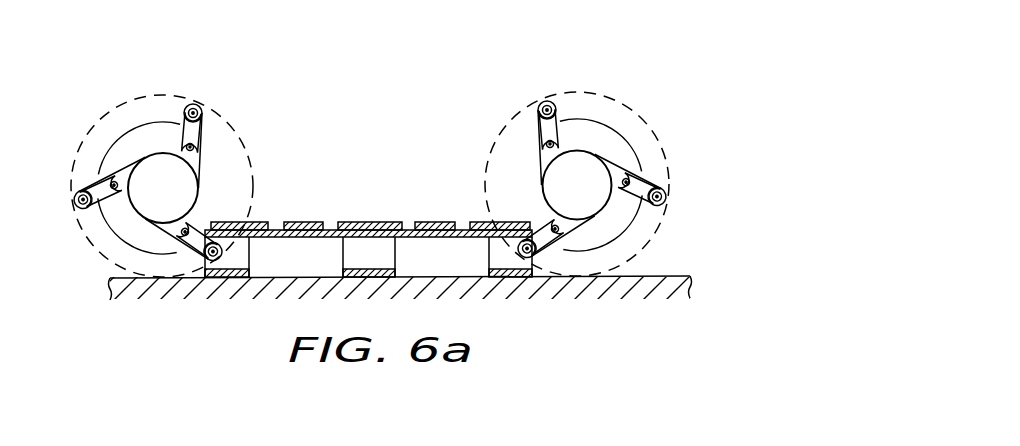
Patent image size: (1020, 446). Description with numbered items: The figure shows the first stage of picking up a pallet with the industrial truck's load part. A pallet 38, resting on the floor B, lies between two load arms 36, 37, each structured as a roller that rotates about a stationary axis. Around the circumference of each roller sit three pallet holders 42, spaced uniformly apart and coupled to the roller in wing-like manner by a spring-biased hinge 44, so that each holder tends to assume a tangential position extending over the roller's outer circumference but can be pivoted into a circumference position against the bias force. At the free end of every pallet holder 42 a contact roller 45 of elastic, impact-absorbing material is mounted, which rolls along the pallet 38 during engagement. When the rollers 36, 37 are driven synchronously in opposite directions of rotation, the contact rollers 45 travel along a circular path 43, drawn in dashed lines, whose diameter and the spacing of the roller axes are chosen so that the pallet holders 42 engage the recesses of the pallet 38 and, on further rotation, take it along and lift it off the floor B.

The load arm 36 is at (553, 185).
The load arm 37 is at (184, 188).
The pallet 38 is at (376, 221).
The pallet holder 42 is at (519, 135).
The circular path 43 is at (102, 121).
The spring-biased hinge 44 is at (95, 184).
The contact roller 45 is at (654, 181).
The floor B is at (690, 276).